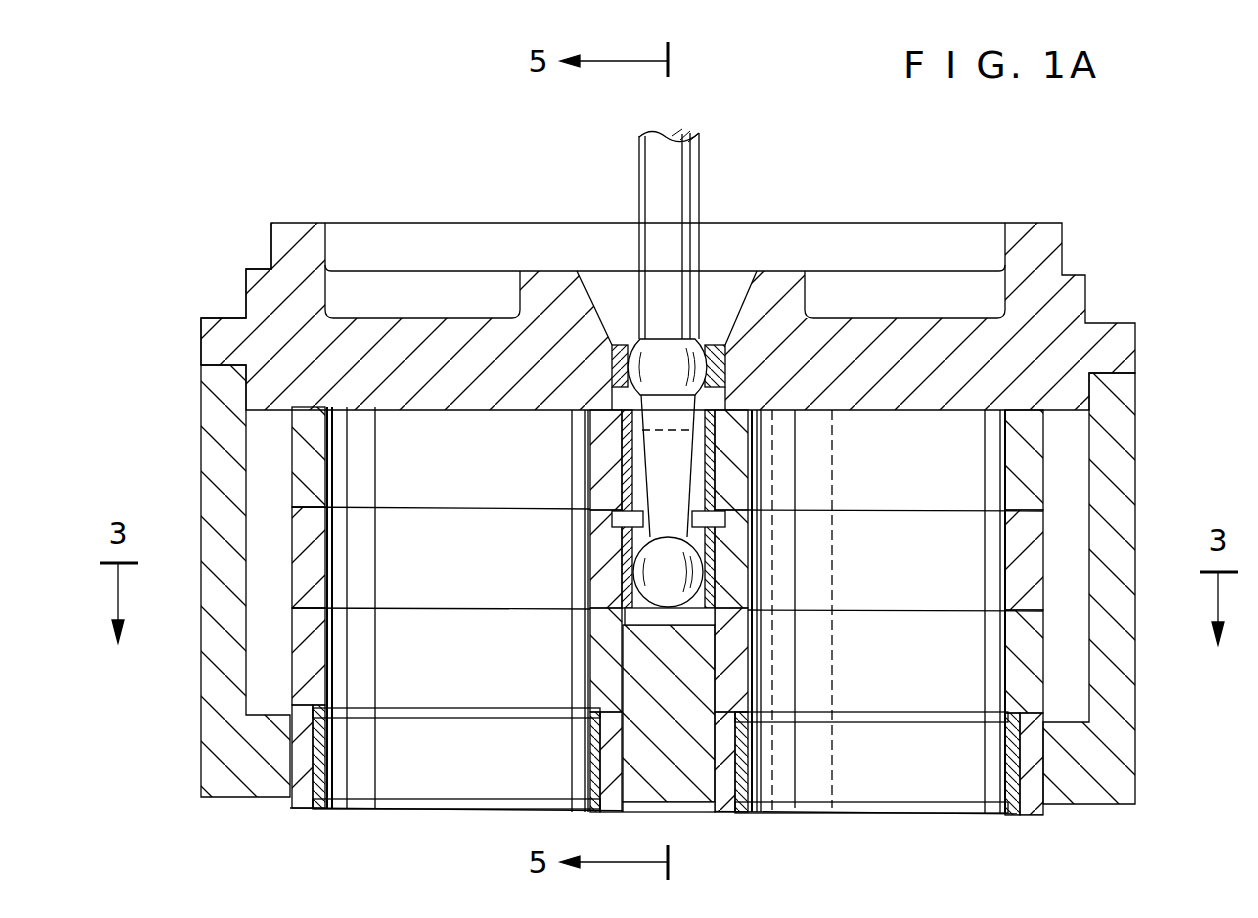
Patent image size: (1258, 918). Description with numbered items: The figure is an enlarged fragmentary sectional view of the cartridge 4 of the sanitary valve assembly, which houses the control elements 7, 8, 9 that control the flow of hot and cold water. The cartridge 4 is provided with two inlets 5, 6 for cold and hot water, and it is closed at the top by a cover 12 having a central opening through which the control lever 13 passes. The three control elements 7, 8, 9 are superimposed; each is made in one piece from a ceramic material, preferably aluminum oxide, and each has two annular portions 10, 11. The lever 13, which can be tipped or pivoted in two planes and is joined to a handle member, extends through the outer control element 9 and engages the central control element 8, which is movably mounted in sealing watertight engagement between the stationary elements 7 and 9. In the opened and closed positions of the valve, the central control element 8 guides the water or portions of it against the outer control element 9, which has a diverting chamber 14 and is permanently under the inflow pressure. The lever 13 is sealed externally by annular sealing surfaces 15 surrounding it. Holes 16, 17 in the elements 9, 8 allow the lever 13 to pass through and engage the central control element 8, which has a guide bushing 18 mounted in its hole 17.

The cartridge 4 is at (222, 749).
The inlet 5 is at (448, 782).
The inlet 6 is at (938, 785).
The control element 7 is at (894, 669).
The central control element 8 is at (883, 582).
The outer control element 9 is at (881, 477).
The annular portion 10 is at (763, 283).
The annular portion 11 is at (1020, 437).
The cover 12 is at (257, 297).
The control lever 13 is at (690, 195).
The diverting chamber 14 is at (453, 430).
The annular sealing surfaces 15 is at (623, 340).
The hole 16 is at (628, 455).
The hole 17 is at (628, 550).
The guide bushing 18 is at (628, 570).